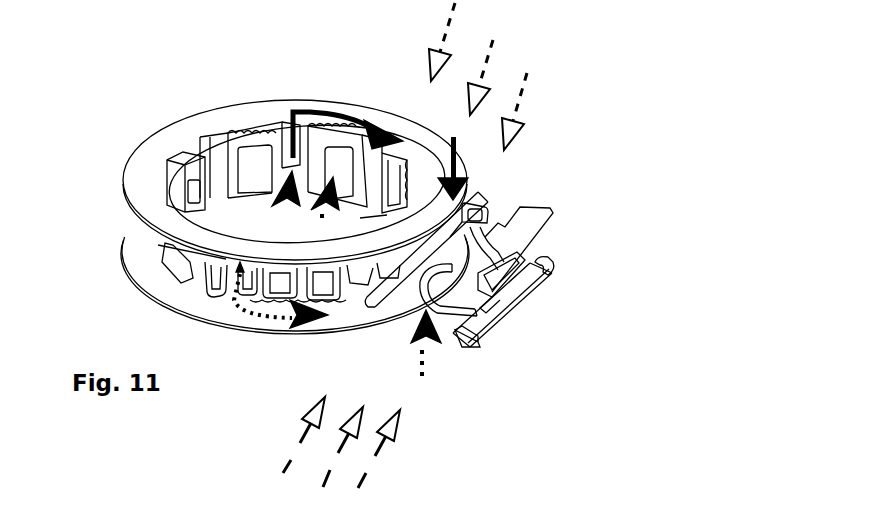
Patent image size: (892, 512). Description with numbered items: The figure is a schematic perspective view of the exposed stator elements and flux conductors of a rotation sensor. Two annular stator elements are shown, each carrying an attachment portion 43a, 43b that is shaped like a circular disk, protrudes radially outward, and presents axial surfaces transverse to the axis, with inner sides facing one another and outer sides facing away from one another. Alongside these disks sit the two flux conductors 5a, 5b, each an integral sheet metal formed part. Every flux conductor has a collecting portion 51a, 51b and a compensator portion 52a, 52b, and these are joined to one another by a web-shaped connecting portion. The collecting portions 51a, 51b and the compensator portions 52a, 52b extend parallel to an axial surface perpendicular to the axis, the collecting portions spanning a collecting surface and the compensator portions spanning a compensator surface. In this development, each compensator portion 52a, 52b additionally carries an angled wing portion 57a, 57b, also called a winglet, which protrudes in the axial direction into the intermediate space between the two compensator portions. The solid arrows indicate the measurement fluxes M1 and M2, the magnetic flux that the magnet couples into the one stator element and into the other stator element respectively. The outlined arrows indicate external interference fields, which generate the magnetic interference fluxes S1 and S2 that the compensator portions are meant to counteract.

The attachment portion 43a is at (247, 113).
The attachment portion 43b is at (153, 277).
The flux conductor 5a is at (527, 293).
The flux conductor 5b is at (532, 205).
The collecting portion 51a is at (473, 200).
The collecting portion 51b is at (388, 303).
The compensator portion 52a is at (495, 308).
The compensator portion 52b is at (523, 228).
The wing portion 57a is at (553, 262).
The wing portion 57b is at (470, 348).
The measurement flux M1 is at (453, 158).
The measurement flux M2 is at (413, 337).
The interference flux S1 is at (503, 133).
The interference flux S2 is at (390, 428).